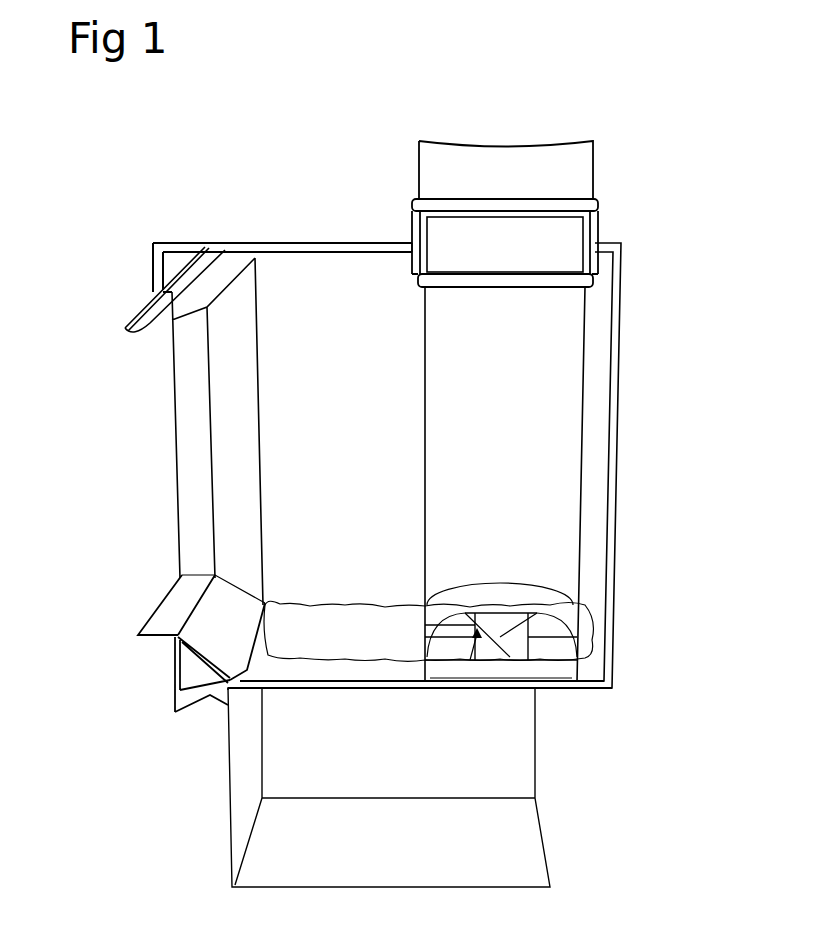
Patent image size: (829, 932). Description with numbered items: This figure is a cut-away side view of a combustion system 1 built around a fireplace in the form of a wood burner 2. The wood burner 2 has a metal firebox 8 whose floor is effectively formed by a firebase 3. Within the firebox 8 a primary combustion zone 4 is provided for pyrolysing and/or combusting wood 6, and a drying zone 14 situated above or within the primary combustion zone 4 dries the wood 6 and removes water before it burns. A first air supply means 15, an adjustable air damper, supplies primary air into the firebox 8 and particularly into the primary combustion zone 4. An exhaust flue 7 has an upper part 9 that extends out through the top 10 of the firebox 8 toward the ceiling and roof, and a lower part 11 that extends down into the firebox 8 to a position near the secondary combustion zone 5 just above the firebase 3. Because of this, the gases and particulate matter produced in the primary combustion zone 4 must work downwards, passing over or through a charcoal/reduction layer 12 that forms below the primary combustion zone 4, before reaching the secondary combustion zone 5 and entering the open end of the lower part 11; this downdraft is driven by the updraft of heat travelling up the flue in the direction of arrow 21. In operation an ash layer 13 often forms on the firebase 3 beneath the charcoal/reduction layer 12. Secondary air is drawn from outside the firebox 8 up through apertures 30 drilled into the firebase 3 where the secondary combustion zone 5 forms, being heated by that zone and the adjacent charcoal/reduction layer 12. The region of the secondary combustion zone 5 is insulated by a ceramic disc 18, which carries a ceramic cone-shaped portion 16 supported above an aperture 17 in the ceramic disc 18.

The combustion system 1 is at (145, 761).
The wood burner 2 is at (188, 450).
The firebase 3 is at (263, 672).
The primary combustion zone 4 is at (385, 500).
The secondary combustion zone 5 is at (552, 592).
The wood 6 is at (278, 353).
The exhaust flue 7 is at (560, 177).
The metal firebox 8 is at (152, 240).
The upper part of the exhaust flue 9 is at (593, 173).
The top of the firebox 10 is at (400, 243).
The lower part of the exhaust flue 11 is at (562, 463).
The charcoal/reduction layer 12 is at (412, 630).
The ash layer 13 is at (337, 668).
The drying zone 14 is at (383, 281).
The first air supply means 15 is at (146, 320).
The ceramic cone-shaped portion 16 is at (537, 663).
The aperture in the ceramic disc 17 is at (500, 630).
The ceramic disc 18 is at (552, 628).
The flue exhaust direction 21 is at (498, 508).
The apertures 30 is at (537, 668).